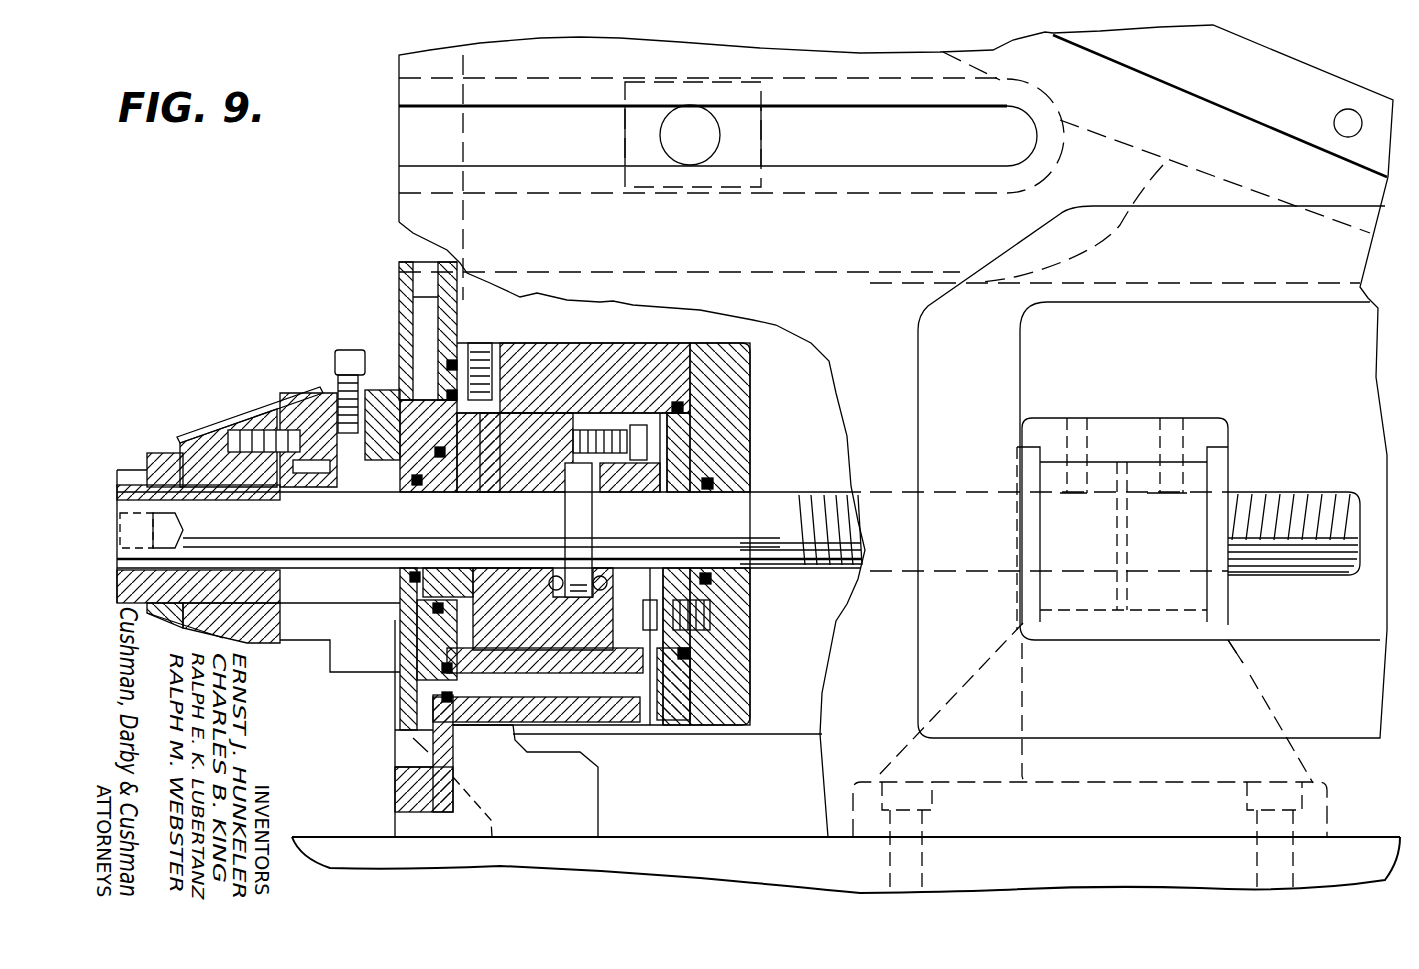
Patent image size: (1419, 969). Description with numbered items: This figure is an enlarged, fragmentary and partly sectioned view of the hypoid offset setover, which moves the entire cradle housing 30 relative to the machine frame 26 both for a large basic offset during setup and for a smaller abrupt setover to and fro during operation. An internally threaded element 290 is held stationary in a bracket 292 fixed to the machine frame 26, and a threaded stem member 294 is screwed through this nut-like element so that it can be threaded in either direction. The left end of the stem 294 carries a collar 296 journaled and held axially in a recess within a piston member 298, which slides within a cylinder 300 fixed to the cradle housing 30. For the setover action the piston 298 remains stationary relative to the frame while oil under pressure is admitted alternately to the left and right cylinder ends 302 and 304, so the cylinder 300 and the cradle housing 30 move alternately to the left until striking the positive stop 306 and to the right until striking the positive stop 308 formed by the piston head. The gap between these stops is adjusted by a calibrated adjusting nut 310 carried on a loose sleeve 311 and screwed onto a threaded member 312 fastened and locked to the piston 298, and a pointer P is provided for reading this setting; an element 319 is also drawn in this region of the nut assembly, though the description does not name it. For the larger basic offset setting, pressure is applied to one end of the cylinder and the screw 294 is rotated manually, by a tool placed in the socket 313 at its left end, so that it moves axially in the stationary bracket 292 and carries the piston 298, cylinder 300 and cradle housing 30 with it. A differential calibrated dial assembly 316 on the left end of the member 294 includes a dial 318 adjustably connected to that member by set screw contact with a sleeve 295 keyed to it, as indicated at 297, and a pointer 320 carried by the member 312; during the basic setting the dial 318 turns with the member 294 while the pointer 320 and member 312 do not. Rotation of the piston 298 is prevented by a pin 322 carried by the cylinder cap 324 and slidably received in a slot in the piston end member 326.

The machine frame 26 is at (1213, 870).
The cradle housing 30 is at (396, 85).
The internally threaded element 290 is at (1232, 425).
The bracket 292 is at (1255, 680).
The threaded stem member 294 is at (260, 510).
The sleeve 295 is at (117, 480).
The collar 296 is at (583, 513).
The key 297 is at (233, 530).
The piston member 298 is at (565, 417).
The cylinder 300 is at (460, 342).
The left cylinder end 302 is at (511, 342).
The right cylinder end 304 is at (663, 642).
The positive stop 306 is at (380, 390).
The positive stop 308 is at (462, 640).
The calibrated adjusting nut 310 is at (378, 672).
The loose sleeve 311 is at (360, 350).
The threaded member 312 is at (280, 408).
The socket 313 is at (150, 532).
The differential calibrated dial assembly 316 is at (172, 420).
The dial 318 is at (160, 447).
The spring washer 319 is at (333, 363).
The pointer 320 is at (213, 427).
The pin 322 is at (670, 610).
The cylinder cap 324 is at (748, 370).
The piston end member 326 is at (653, 470).
The pointer P is at (428, 331).